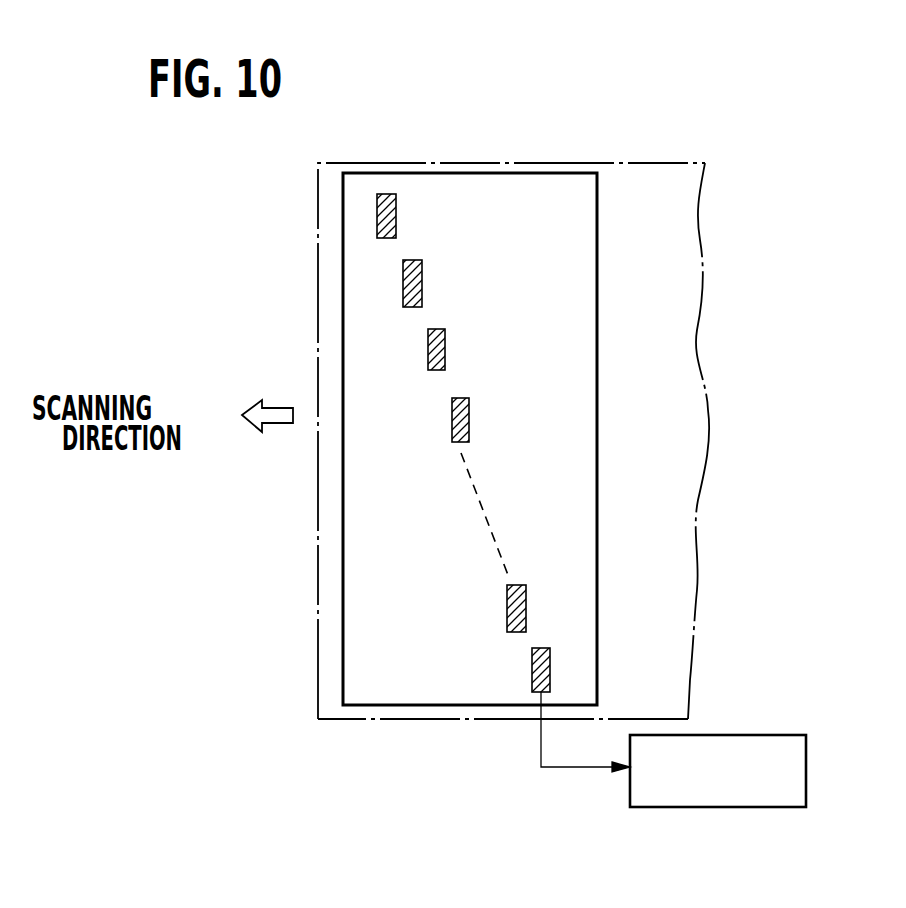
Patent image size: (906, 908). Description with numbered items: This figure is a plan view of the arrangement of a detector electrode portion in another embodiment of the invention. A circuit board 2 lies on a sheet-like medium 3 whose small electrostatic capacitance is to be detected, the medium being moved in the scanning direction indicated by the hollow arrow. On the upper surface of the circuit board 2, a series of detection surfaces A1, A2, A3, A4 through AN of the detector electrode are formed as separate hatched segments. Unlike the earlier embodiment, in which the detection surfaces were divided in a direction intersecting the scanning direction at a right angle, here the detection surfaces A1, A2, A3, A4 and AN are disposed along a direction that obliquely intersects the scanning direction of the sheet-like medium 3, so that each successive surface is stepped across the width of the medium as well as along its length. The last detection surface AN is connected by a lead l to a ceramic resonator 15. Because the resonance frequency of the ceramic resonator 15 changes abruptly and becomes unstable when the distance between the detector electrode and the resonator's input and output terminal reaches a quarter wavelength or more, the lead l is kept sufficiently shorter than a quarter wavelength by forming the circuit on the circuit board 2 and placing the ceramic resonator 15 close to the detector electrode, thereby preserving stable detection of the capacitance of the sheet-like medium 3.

The circuit board 2 is at (588, 264).
The sheet-like medium 3 is at (318, 604).
The detection surface A1 is at (396, 216).
The detection surface A2 is at (422, 283).
The detection surface A3 is at (445, 345).
The detection surface A4 is at (469, 417).
The detection surface AN is at (550, 666).
The lead l is at (578, 770).
The ceramic resonator 15 is at (733, 731).